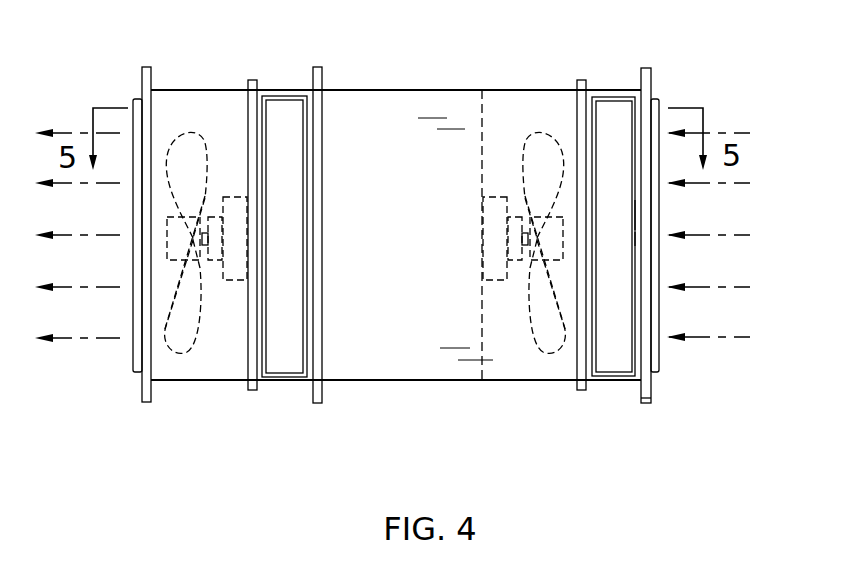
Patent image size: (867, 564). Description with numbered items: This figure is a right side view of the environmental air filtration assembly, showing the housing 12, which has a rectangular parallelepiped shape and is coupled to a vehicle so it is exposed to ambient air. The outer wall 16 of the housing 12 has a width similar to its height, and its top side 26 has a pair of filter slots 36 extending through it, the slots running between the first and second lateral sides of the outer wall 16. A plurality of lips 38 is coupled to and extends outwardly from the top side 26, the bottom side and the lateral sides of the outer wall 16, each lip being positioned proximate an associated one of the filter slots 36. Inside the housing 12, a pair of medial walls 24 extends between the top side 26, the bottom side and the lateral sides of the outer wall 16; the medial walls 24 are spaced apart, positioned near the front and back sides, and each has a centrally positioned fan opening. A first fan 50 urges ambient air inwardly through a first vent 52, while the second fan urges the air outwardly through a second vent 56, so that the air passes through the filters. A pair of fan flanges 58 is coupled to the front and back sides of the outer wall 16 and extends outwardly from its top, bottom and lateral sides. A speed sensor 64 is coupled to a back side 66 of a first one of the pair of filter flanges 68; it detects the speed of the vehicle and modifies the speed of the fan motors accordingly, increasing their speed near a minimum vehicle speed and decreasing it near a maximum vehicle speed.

The housing 12 is at (360, 404).
The outer wall 16 is at (535, 383).
The medial walls 24 is at (483, 128).
The top side 26 is at (392, 110).
The filter slots 36 is at (277, 392).
The lips 38 is at (315, 68).
The first fan 50 is at (560, 310).
The first vent 52 is at (660, 217).
The second vent 56 is at (140, 370).
The fan flanges 58 is at (142, 70).
The speed sensor 64 is at (637, 214).
The back side 66 is at (638, 238).
The filter flanges 68 is at (646, 406).